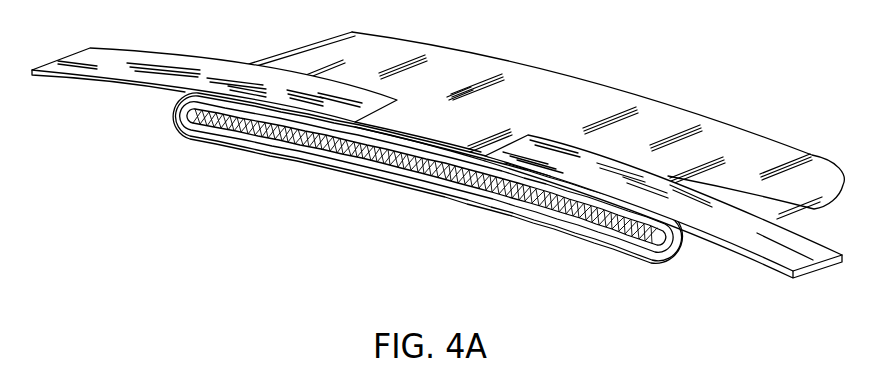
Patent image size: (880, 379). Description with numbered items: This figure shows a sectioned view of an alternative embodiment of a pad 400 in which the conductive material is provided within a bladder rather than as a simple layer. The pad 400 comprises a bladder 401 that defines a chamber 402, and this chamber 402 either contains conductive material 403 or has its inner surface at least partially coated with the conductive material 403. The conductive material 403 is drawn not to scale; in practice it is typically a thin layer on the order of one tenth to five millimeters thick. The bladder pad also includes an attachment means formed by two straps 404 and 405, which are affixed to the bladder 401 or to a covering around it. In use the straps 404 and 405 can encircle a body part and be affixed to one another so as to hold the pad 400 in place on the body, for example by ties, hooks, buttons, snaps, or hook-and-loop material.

The pad 400 is at (337, 179).
The bladder 401 is at (172, 125).
The chamber 402 is at (536, 204).
The conductive material 403 is at (632, 240).
The strap 404 is at (790, 275).
The strap 405 is at (56, 81).